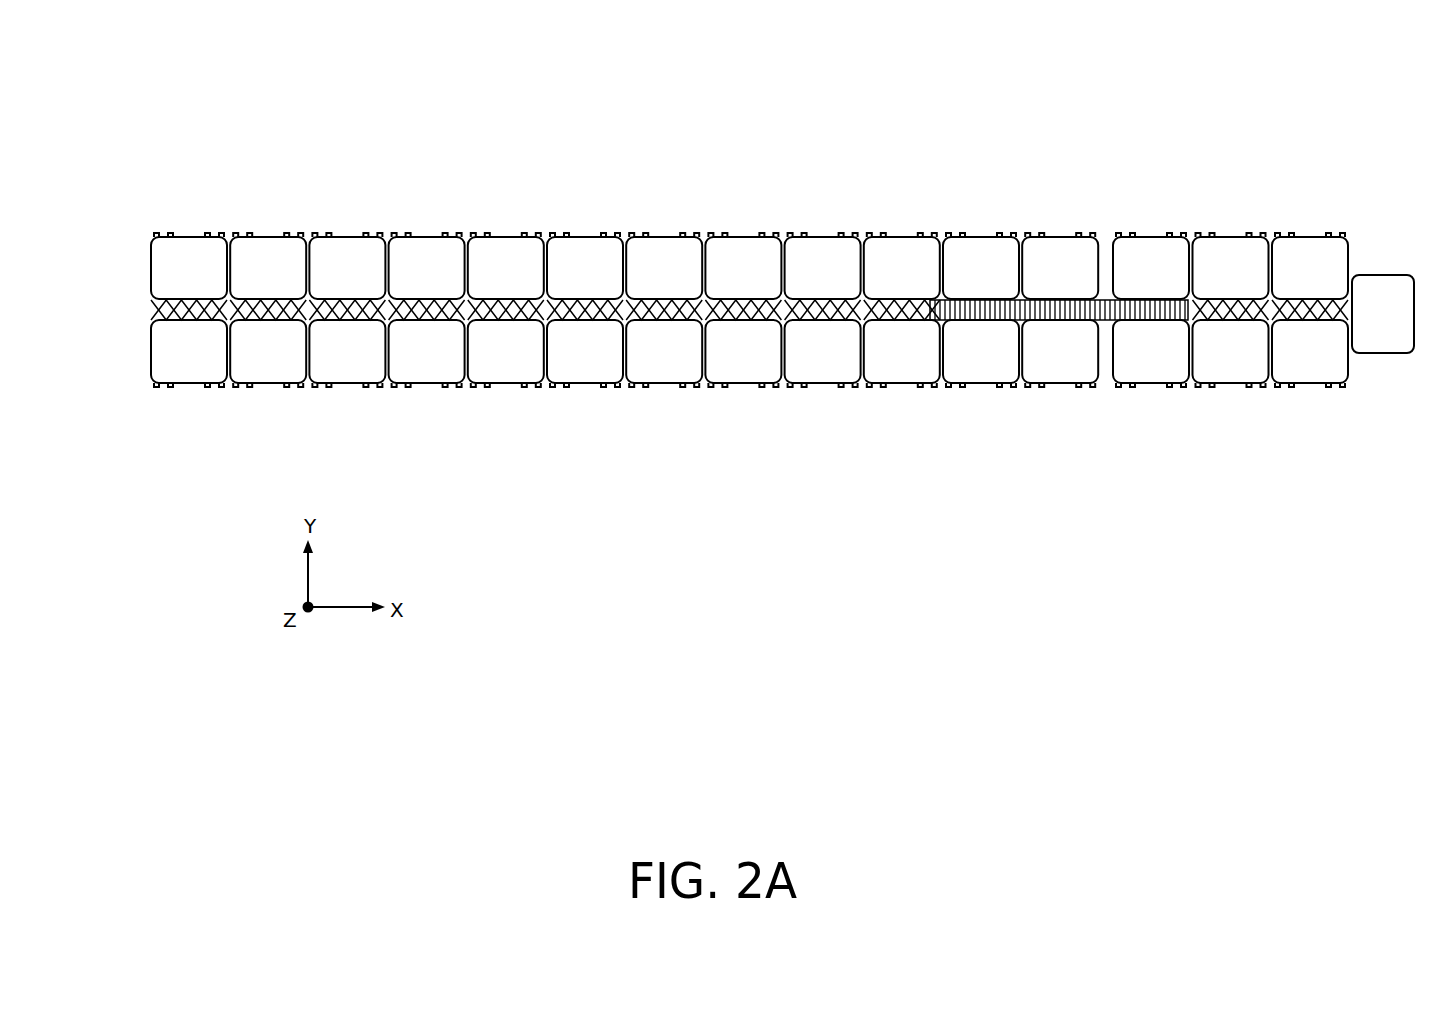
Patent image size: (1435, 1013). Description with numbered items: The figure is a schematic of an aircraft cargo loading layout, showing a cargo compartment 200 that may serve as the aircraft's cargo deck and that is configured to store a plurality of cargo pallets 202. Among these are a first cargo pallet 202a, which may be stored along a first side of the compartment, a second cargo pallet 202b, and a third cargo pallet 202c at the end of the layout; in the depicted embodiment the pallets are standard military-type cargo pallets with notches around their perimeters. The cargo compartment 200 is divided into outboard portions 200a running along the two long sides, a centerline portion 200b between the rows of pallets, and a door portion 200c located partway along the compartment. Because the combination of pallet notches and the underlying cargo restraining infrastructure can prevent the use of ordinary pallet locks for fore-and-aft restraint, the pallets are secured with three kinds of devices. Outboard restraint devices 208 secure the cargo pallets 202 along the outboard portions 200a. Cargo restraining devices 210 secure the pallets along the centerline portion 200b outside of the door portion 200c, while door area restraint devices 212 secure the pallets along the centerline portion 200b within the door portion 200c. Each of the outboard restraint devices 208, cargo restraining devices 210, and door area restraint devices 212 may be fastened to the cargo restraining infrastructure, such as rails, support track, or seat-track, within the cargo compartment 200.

The cargo compartment 200 is at (1035, 87).
The outboard portions 200a is at (138, 223).
The centerline portion 200b is at (138, 305).
The door portion 200c is at (1053, 423).
The cargo pallets 202 is at (177, 365).
The first cargo pallet 202a is at (182, 255).
The second cargo pallet 202b is at (742, 372).
The third cargo pallet 202c is at (1385, 283).
The outboard restraint devices 208 is at (230, 260).
The cargo restraining devices 210 is at (139, 319).
The door area restraint devices 212 is at (963, 305).